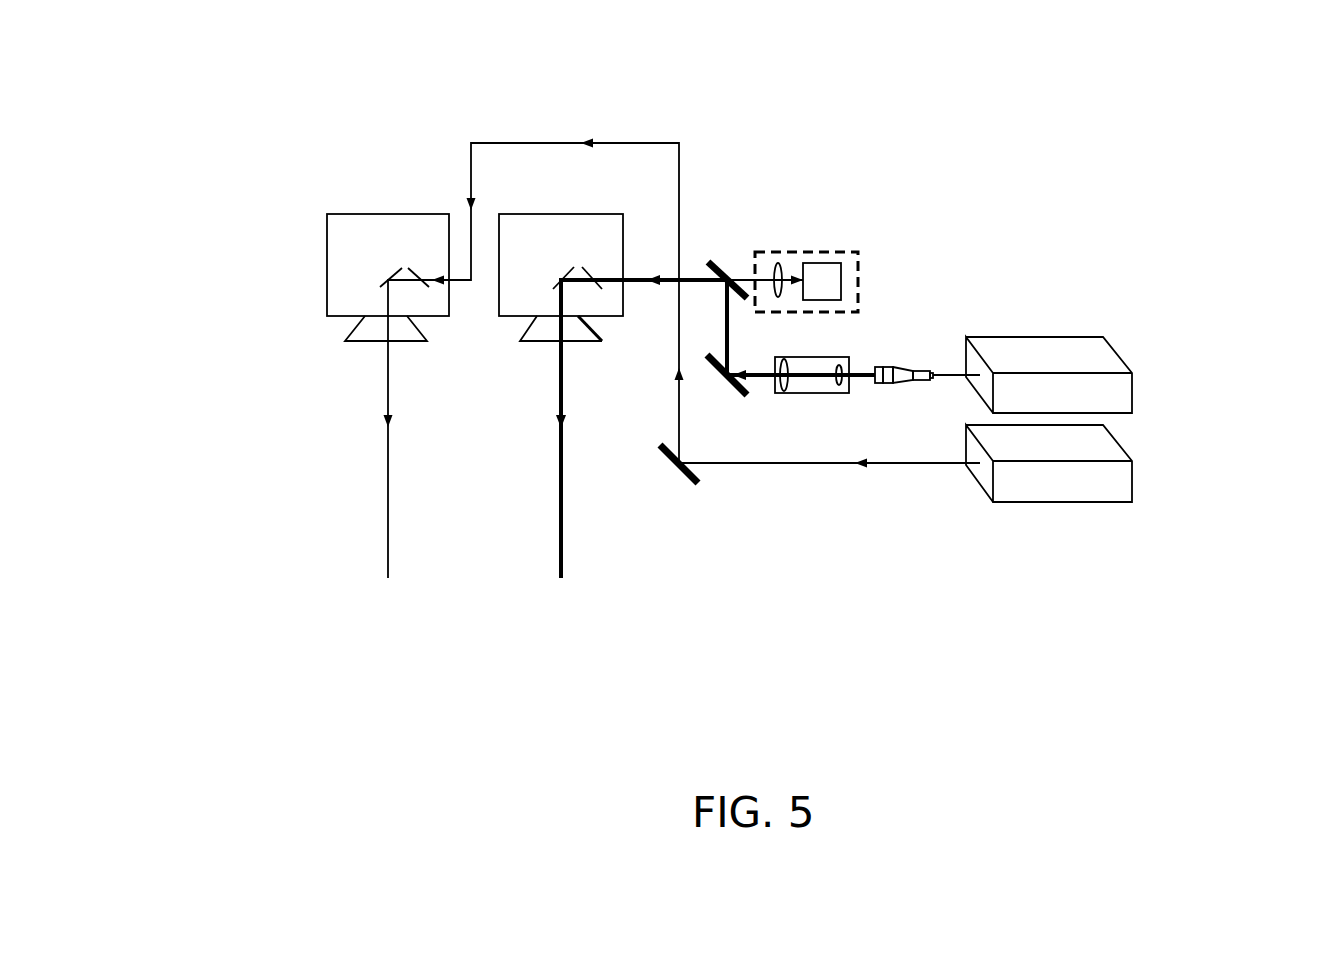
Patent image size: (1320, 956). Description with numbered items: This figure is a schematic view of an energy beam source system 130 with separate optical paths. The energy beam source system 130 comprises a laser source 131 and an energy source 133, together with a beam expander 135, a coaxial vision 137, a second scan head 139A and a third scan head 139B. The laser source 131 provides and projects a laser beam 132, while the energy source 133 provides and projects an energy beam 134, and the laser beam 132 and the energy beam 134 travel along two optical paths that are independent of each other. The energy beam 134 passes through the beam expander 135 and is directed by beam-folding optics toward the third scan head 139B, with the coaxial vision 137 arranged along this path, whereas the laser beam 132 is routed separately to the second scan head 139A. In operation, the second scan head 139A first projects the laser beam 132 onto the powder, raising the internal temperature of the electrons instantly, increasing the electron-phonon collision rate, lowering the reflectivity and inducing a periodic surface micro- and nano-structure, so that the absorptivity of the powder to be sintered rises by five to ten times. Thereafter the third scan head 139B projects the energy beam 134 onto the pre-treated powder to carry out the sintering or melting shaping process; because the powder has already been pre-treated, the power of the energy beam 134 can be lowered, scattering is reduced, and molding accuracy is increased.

The energy beam source system 130 is at (300, 108).
The laser source 131 is at (1103, 445).
The laser beam 132 is at (788, 463).
The energy source 133 is at (1103, 357).
The energy beam 134 is at (858, 375).
The beam expander 135 is at (810, 357).
The coaxial vision 137 is at (807, 252).
The second scan head 139A is at (343, 214).
The third scan head 139B is at (533, 214).